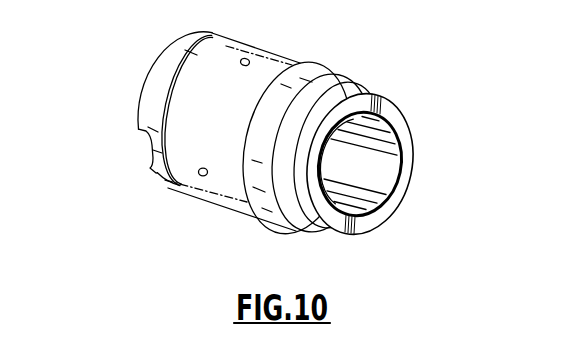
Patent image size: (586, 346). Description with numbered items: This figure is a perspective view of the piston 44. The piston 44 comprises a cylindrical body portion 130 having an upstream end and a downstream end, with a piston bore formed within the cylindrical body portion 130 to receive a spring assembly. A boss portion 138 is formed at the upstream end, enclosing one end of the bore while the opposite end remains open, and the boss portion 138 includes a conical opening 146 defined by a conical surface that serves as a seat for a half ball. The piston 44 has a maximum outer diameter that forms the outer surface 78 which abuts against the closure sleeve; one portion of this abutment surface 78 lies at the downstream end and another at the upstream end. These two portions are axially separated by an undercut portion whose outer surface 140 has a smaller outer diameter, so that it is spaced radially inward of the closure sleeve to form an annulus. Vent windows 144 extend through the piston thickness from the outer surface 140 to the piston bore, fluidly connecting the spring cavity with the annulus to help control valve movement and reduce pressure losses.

The piston 44 is at (113, 102).
The outer surface 78 is at (211, 34).
The cylindrical body portion 130 is at (212, 100).
The boss portion 138 is at (404, 114).
The outer surface 140 is at (191, 148).
The vent windows 144 is at (250, 64).
The conical opening 146 is at (362, 163).